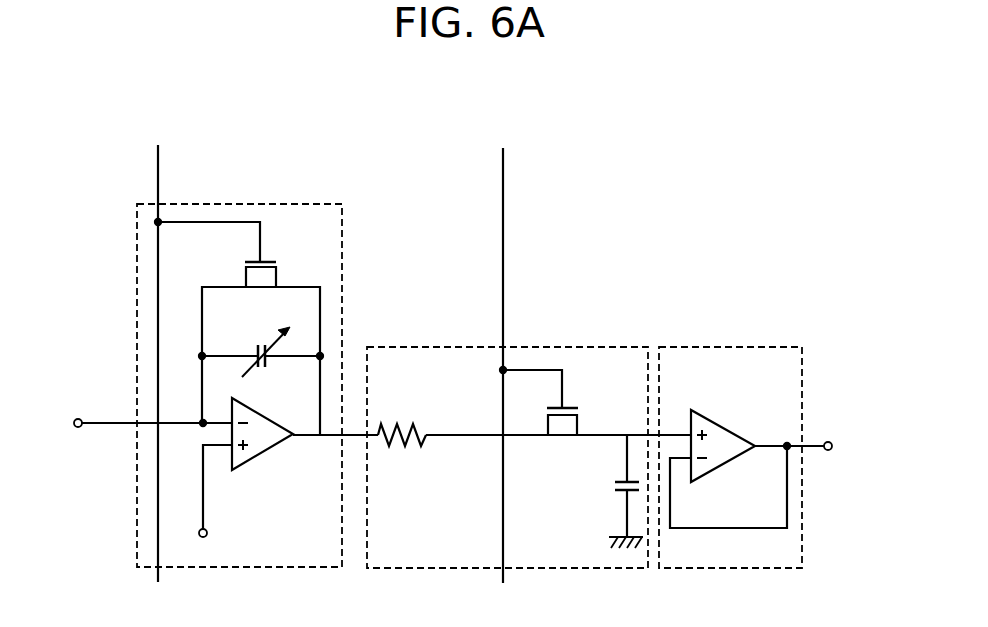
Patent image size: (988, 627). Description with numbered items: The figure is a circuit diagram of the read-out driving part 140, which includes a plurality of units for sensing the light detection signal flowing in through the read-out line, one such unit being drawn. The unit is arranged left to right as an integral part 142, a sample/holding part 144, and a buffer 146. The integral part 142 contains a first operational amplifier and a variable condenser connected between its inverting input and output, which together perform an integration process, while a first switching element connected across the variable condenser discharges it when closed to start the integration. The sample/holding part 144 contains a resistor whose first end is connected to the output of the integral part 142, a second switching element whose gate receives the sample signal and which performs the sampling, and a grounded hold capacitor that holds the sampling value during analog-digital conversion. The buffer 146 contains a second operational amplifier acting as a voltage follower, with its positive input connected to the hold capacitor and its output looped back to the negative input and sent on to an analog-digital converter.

The read-out driving part 140 is at (628, 81).
The integral part 142 is at (262, 204).
The sample/holding part 144 is at (431, 347).
The buffer 146 is at (738, 347).